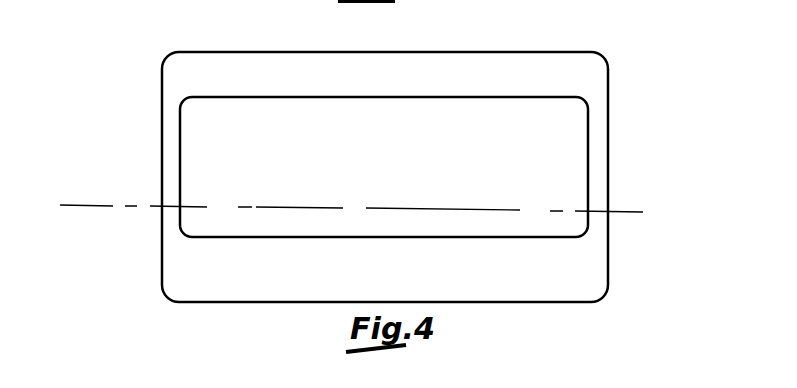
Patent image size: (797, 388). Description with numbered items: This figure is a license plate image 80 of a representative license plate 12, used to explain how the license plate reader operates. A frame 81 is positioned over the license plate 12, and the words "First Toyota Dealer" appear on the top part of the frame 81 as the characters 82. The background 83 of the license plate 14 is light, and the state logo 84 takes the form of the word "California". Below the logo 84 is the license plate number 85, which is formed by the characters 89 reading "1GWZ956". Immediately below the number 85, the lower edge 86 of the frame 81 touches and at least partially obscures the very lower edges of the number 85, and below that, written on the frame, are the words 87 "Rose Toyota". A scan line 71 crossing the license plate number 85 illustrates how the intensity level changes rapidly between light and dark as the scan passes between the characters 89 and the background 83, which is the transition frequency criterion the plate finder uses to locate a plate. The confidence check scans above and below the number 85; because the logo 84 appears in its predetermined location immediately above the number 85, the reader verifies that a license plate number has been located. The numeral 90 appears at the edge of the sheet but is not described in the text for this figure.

The license plate 12 is at (467, 45).
The license plate 14 is at (525, 112).
The scan line 71 is at (90, 204).
The license plate image 80 is at (615, 73).
The frame 81 is at (182, 72).
The characters 82 is at (208, 72).
The background 83 is at (195, 107).
The state logo 84 is at (285, 113).
The license plate number 85 is at (226, 197).
The lower edge 86 is at (207, 237).
The words 87 is at (268, 265).
The characters 89 is at (230, 182).
The element 90 is at (144, 381).